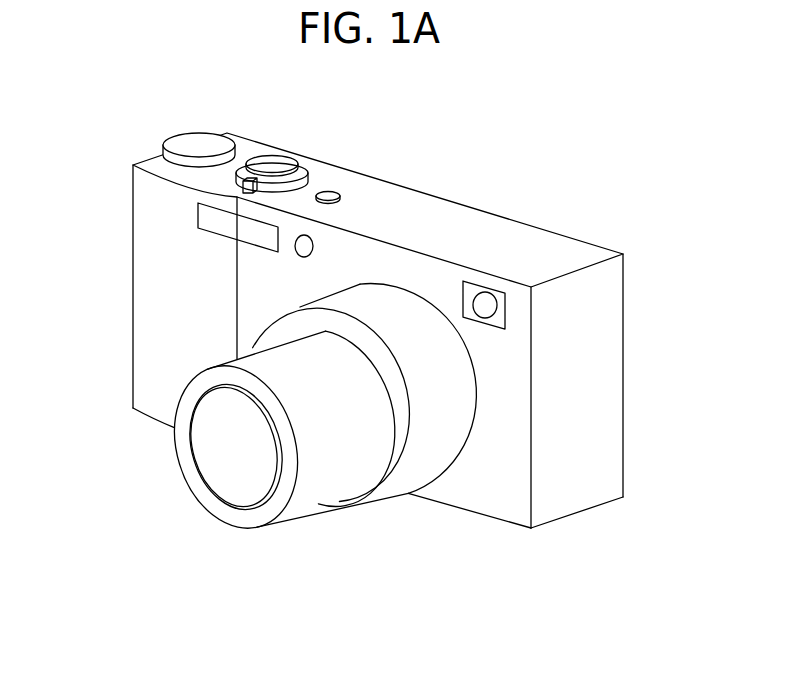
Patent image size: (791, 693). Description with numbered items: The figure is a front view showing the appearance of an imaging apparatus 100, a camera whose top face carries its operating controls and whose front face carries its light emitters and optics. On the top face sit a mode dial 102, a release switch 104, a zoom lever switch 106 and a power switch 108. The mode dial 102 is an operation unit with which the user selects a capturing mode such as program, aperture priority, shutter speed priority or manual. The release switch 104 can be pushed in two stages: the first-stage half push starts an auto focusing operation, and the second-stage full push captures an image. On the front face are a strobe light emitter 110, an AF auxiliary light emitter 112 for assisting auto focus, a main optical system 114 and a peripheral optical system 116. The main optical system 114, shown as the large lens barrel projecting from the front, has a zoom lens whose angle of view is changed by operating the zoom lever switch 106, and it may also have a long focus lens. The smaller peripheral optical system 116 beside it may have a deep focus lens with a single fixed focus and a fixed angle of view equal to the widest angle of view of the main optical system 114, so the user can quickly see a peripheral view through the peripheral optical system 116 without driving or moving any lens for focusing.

The imaging apparatus 100 is at (523, 137).
The mode dial 102 is at (193, 137).
The release switch 104 is at (275, 157).
The zoom lever switch 106 is at (241, 184).
The power switch 108 is at (328, 191).
The strobe light emitter 110 is at (200, 220).
The AF auxiliary light emitter 112 is at (300, 254).
The main optical system 114 is at (330, 477).
The peripheral optical system 116 is at (507, 308).